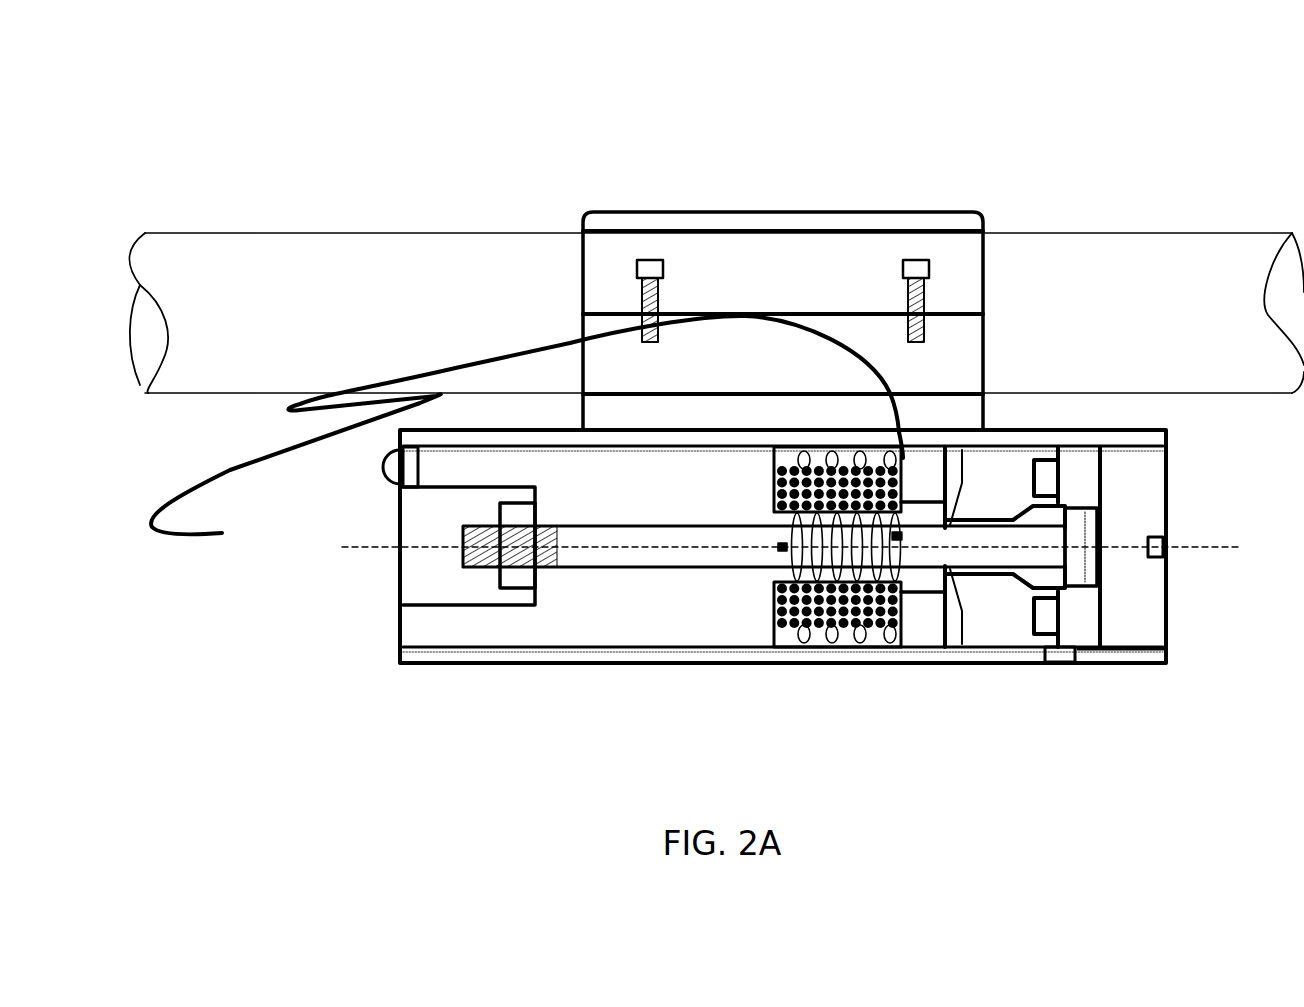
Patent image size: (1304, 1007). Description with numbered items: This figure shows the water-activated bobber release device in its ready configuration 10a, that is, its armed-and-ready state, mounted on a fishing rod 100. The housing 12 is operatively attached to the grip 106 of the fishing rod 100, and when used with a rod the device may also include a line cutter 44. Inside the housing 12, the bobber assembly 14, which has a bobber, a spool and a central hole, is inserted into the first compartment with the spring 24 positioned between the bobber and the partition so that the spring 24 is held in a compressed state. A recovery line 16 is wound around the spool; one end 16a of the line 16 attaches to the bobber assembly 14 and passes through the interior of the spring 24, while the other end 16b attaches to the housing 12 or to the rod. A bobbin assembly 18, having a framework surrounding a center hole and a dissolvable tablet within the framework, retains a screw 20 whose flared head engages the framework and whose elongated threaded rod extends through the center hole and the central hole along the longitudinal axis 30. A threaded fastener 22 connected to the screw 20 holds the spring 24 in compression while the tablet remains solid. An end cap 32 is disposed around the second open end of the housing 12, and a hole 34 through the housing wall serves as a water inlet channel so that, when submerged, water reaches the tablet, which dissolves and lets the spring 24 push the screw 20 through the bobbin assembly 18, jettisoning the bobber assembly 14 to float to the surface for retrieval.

The ready configuration 10a is at (367, 735).
The housing 12 is at (688, 665).
The bobber assembly 14 is at (642, 622).
The line 16 is at (810, 623).
The line end attached to bobber assembly 16a is at (900, 443).
The line end attached to housing or rod 16b is at (748, 312).
The bobbin assembly 18 is at (1007, 623).
The screw 20 is at (631, 553).
The threaded fastener 22 is at (505, 590).
The spring 24 is at (873, 630).
The longitudinal axis 30 is at (360, 547).
The end cap 32 is at (1132, 623).
The hole 34 is at (1057, 655).
The line cutter 44 is at (987, 402).
The fishing rod 100 is at (440, 226).
The grip 106 is at (312, 268).